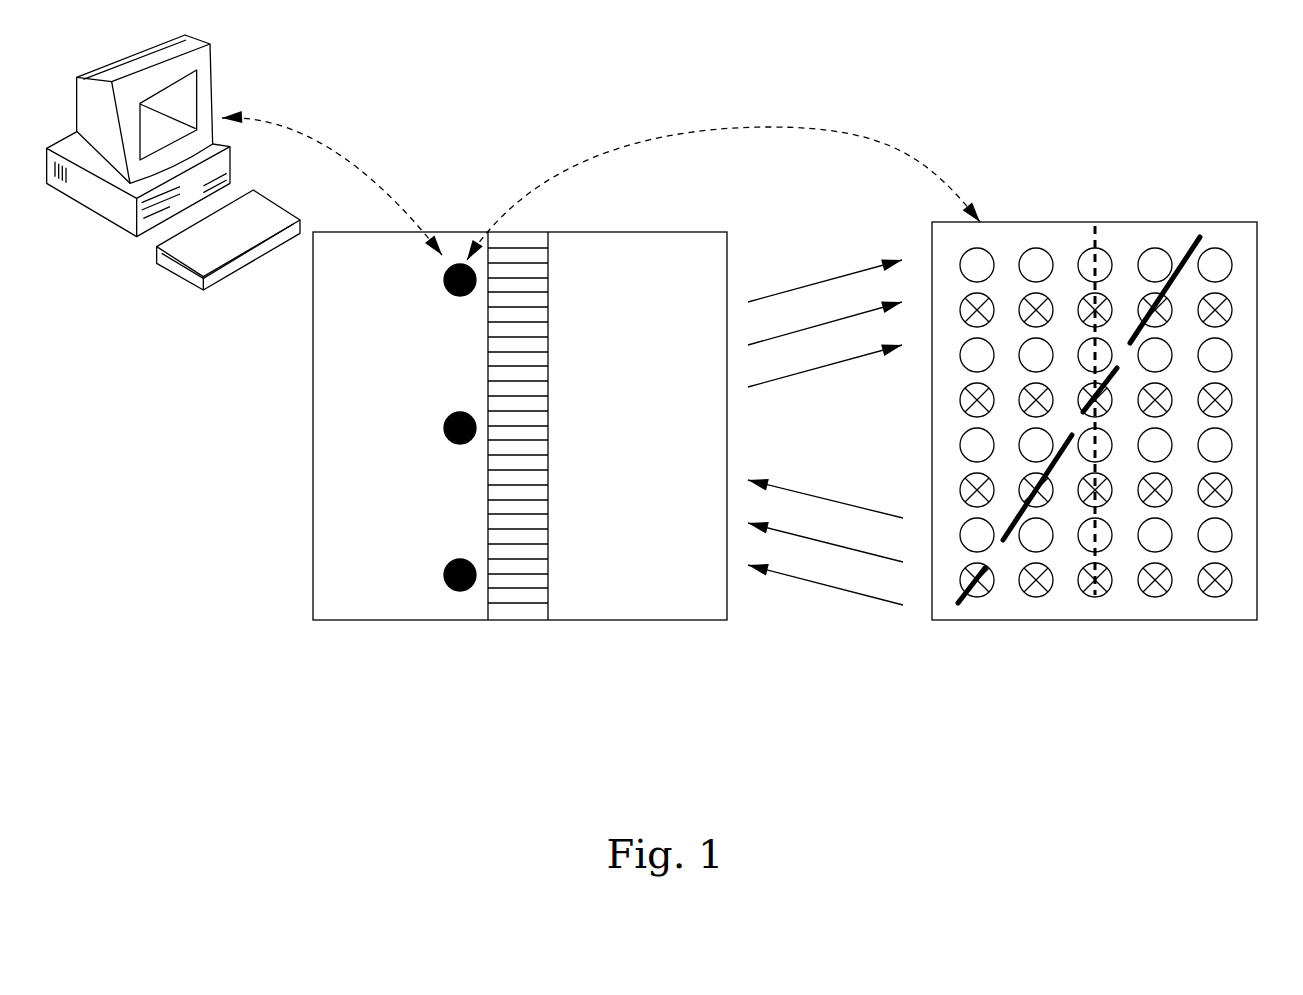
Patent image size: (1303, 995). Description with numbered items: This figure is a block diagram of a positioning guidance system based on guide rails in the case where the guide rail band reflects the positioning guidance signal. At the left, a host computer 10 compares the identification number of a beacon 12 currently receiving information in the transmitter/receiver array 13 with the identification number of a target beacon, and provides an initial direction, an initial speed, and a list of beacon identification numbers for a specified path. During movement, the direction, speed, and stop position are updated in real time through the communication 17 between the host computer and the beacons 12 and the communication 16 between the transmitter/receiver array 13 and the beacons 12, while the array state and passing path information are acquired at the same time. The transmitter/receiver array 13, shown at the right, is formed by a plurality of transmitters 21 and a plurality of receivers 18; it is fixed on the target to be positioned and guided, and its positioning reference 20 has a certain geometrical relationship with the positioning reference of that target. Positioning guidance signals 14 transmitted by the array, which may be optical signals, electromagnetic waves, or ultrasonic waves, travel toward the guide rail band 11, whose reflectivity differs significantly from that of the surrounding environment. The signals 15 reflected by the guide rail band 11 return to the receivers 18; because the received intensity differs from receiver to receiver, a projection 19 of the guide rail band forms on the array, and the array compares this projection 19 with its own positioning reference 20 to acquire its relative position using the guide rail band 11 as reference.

The host computer 10 is at (137, 237).
The guide rail band for reflecting a positioning guidance signal 11 is at (530, 605).
The beacons 12 is at (457, 595).
The transmitter/receiver array 13 is at (1153, 610).
The positioning guidance signals transmitted by the transmitter/receiver array 14 is at (845, 562).
The positioning guidance signals reflected by the guide rail band 15 is at (830, 310).
The communication between the transmitter/receiver array and the beacons 16 is at (873, 140).
The communication between the host computer and the beacons 17 is at (345, 155).
The receivers 18 is at (1213, 583).
The projection of the guide rail band on the transmitter/receiver array 19 is at (960, 612).
The transmitter/receiver array positioning reference 20 is at (1095, 223).
The transmitters 21 is at (1213, 263).